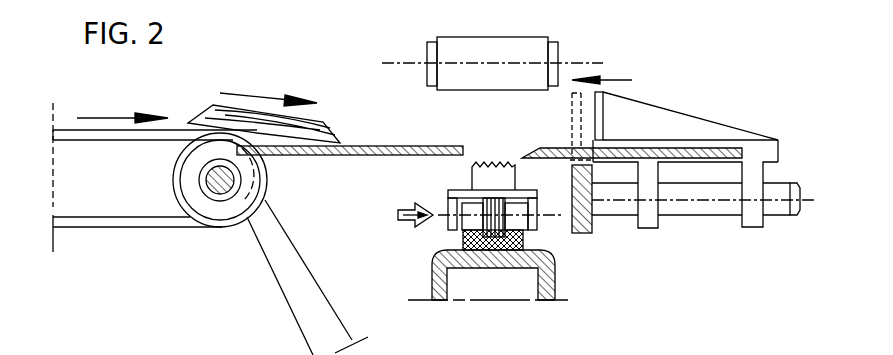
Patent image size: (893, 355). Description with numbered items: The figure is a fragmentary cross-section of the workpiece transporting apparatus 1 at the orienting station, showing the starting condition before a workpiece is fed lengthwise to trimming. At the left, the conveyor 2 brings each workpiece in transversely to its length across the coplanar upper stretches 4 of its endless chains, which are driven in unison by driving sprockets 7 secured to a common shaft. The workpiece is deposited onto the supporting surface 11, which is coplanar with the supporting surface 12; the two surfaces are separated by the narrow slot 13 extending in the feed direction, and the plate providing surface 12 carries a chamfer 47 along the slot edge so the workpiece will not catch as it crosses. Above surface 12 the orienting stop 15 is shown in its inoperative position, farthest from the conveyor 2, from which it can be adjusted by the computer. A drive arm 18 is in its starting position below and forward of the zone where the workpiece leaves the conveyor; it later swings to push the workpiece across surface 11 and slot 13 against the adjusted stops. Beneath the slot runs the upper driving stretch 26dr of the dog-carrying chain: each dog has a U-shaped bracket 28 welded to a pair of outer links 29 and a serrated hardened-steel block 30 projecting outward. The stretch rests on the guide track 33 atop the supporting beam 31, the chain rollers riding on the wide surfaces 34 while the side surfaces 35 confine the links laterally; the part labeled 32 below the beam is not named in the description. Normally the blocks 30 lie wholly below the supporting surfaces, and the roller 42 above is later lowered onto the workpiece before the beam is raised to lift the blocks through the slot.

The workpiece transporting apparatus 1 is at (586, 38).
The conveyor 2 is at (51, 92).
The upper stretches 4 is at (117, 130).
The driving sprockets 7 is at (215, 213).
The supporting surface 11 is at (365, 145).
The supporting surface 12 is at (572, 145).
The slot 13 is at (487, 158).
The orienting stop 15 is at (588, 120).
The drive arm 18 is at (293, 275).
The upper driving stretch of the chain 26dr is at (445, 218).
The U-shaped bracket 28 is at (536, 190).
The outer links 29 is at (515, 222).
The block 30 is at (474, 178).
The supporting beam 31 is at (566, 308).
The base 32 is at (473, 262).
The guide track 33 is at (512, 251).
The surfaces 34 is at (537, 225).
The side surfaces 35 is at (450, 230).
The roller 42 is at (452, 49).
The chamfer 47 is at (591, 352).